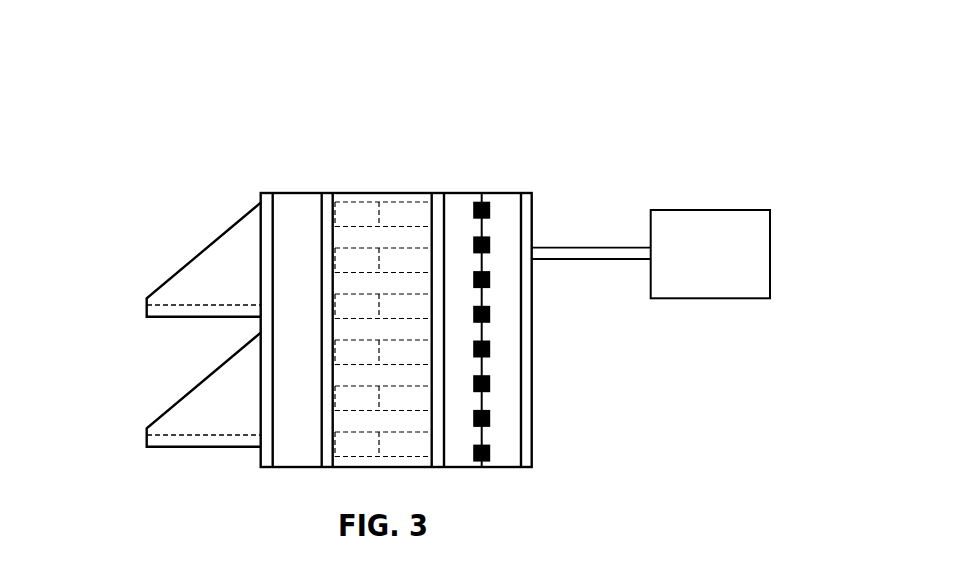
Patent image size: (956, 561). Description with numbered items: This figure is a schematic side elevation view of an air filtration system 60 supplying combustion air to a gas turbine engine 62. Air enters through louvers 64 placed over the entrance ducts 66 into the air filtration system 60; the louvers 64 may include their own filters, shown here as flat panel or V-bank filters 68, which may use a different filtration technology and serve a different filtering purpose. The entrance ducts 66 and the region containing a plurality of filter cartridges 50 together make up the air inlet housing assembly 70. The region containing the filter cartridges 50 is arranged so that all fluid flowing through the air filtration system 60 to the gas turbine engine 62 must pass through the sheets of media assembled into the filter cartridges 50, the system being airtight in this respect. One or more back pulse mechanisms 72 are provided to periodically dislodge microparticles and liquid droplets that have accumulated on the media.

The air filtration system 60 is at (732, 64).
The air inlet housing assembly 70 is at (241, 133).
The entrance ducts 66 is at (268, 247).
The filter cartridge 50 is at (408, 213).
The back pulse mechanism 72 is at (489, 212).
The louvers 64 is at (190, 272).
The flat panel or V-bank filters 68 is at (197, 305).
The gas turbine engine 62 is at (680, 210).